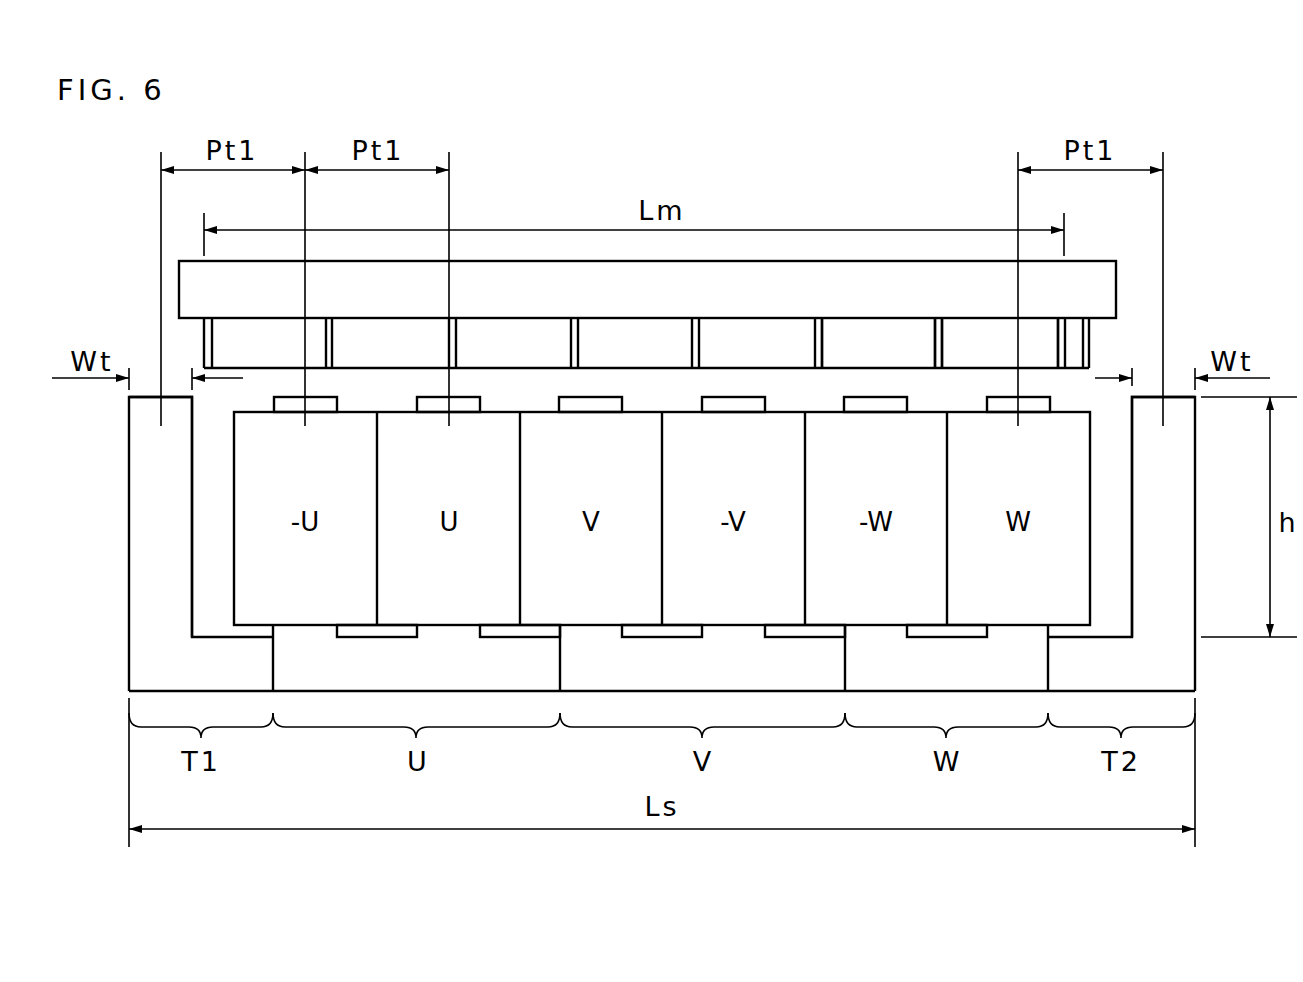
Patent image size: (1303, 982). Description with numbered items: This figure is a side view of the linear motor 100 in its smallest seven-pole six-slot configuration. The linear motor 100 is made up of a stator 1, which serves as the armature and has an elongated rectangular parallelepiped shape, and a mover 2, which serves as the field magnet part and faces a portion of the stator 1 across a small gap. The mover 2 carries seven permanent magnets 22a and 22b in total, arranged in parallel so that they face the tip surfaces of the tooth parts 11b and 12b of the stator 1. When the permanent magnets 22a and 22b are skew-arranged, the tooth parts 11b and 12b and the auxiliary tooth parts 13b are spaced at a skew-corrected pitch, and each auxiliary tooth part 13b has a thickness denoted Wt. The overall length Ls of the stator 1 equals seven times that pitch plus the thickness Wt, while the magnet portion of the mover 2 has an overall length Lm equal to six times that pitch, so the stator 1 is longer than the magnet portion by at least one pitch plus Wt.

The linear motor 100 is at (1232, 143).
The stator 1 is at (1224, 680).
The mover 2 is at (191, 251).
The tooth part 11b is at (597, 403).
The tooth part 12b is at (893, 400).
The auxiliary tooth part 13b is at (147, 490).
The permanent magnet 22a is at (865, 327).
The permanent magnet 22b is at (968, 327).